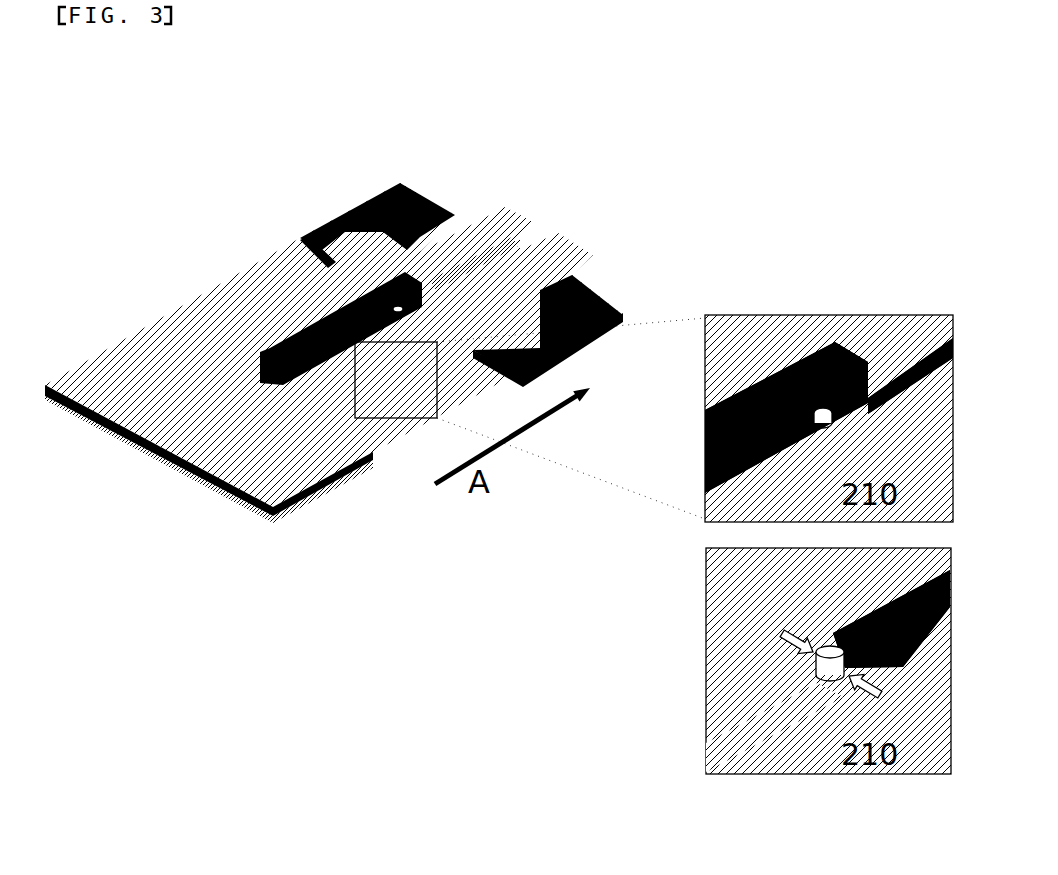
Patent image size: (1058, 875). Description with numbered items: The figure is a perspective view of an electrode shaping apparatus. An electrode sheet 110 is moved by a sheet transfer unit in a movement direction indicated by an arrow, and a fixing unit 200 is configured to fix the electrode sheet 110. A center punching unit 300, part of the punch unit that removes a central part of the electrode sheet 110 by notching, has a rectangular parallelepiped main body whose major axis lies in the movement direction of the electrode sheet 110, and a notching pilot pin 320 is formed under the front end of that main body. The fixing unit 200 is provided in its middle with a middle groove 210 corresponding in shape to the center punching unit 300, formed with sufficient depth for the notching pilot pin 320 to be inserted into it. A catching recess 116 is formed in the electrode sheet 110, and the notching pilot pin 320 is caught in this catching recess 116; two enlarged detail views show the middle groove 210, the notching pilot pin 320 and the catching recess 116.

The electrode sheet 110 is at (128, 355).
The fixing unit 200 is at (403, 210).
The middle groove 210 is at (332, 368).
The center punching unit 300 is at (310, 325).
The notching pilot pin 320 is at (829, 675).
The catching recess 116 is at (800, 674).